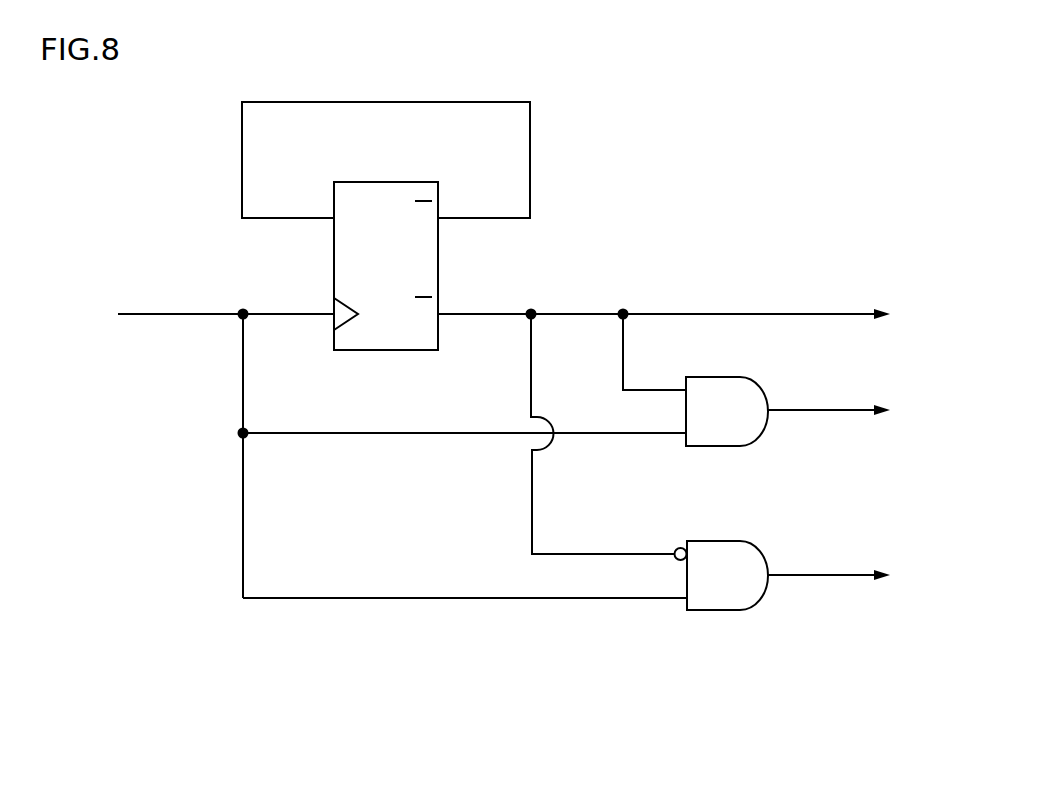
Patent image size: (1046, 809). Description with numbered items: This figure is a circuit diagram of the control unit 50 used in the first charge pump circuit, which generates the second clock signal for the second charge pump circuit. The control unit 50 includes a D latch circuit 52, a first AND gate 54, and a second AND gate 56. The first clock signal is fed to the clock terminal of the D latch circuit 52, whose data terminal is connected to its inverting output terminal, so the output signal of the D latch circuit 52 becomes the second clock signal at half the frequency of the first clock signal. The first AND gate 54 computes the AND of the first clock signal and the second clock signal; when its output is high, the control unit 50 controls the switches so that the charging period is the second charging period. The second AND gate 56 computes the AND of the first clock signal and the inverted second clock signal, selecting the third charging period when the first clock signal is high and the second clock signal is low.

The control unit 50 is at (527, 737).
The D latch circuit 52 is at (387, 182).
The first AND gate 54 is at (732, 377).
The second AND gate 56 is at (734, 541).